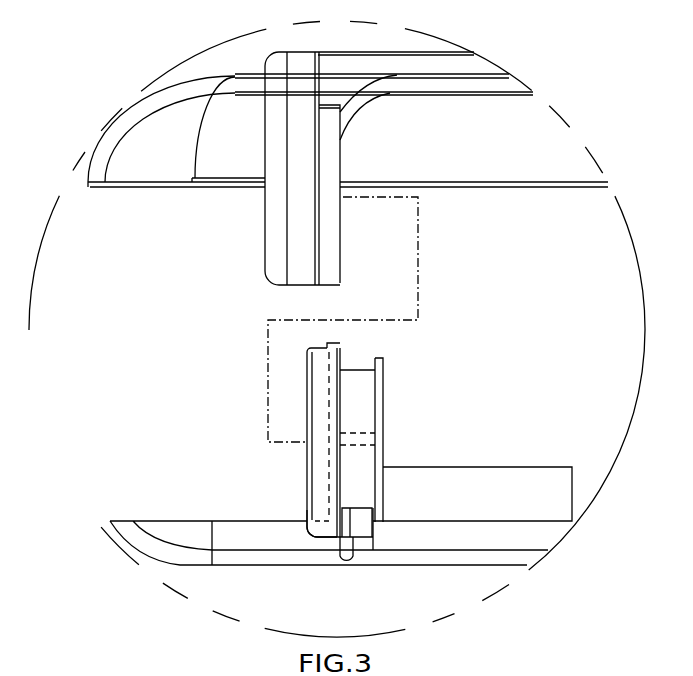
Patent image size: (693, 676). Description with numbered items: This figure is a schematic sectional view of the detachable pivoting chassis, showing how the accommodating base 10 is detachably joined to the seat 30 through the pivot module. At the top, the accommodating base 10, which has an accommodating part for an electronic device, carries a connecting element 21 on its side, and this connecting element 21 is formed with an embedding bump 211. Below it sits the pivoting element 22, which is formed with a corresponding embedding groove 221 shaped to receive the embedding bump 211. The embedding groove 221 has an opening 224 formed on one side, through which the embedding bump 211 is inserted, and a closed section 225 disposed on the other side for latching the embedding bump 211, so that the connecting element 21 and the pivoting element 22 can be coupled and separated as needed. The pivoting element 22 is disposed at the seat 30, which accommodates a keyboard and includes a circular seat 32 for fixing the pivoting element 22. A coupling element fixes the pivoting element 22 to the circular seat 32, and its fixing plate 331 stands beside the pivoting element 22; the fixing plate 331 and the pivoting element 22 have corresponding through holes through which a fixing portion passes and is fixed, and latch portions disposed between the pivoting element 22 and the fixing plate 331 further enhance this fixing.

The accommodating base 10 is at (152, 143).
The connecting element 21 is at (277, 223).
The embedding bump 211 is at (340, 228).
The pivoting element 22 is at (332, 352).
The opening 224 is at (322, 346).
The embedding groove 221 is at (322, 470).
The closed section 225 is at (320, 528).
The fixing plate 331 is at (378, 449).
The seat 30 is at (162, 547).
The circular seat 32 is at (362, 528).